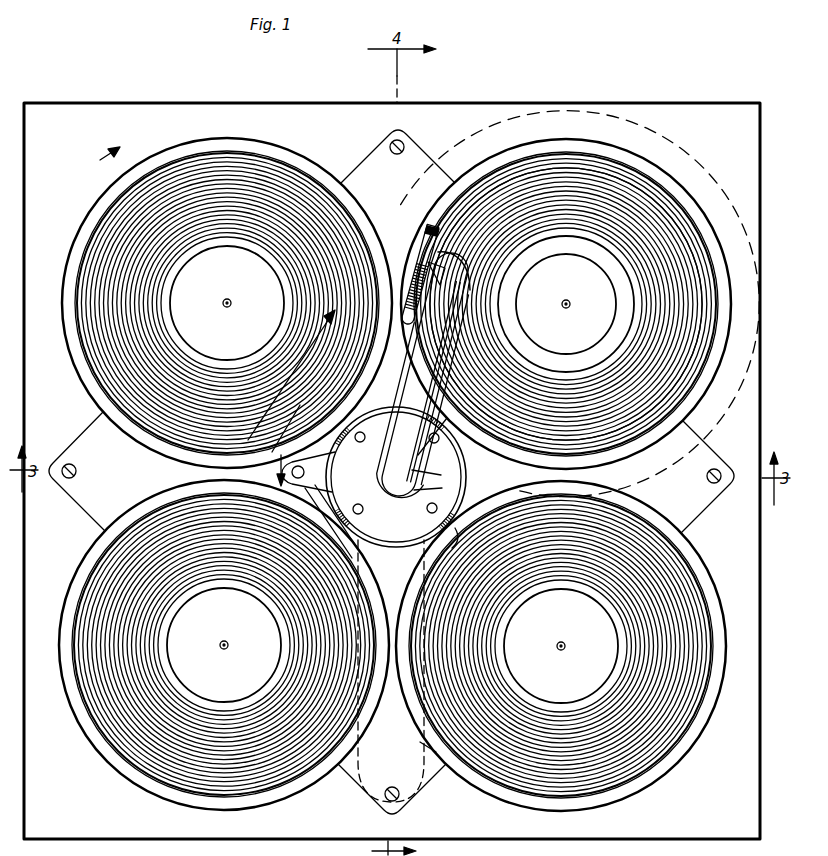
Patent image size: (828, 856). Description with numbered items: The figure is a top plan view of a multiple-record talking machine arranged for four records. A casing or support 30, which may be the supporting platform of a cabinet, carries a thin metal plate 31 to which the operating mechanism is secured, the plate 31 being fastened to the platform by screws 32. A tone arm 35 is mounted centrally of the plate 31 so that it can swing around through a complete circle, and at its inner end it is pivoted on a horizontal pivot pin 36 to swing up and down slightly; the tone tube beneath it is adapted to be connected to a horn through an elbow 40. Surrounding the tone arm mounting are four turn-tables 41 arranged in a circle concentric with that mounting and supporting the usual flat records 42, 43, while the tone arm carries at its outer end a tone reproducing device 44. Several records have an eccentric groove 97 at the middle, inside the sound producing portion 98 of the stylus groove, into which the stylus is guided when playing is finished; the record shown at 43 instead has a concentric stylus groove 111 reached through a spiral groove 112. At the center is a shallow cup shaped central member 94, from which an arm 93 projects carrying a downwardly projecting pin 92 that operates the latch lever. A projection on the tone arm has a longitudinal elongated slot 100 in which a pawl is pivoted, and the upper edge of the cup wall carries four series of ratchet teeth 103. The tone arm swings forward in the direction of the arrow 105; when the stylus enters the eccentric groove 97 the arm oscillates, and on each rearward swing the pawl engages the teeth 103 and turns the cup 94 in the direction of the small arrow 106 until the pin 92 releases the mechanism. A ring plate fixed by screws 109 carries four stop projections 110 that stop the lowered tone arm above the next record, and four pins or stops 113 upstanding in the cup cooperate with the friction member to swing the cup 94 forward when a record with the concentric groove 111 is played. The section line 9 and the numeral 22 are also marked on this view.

The section line arrow 9 is at (104, 157).
The pick-up arm 22 is at (428, 396).
The casing or support 30 is at (632, 120).
The thin metal plate 31 is at (370, 158).
The screws 32 is at (405, 147).
The tone arm 35 is at (462, 262).
The horizontal pivot pin 36 is at (372, 480).
The elbow 40 is at (428, 750).
The turn-tables 41 is at (683, 192).
The flat record 42 is at (90, 254).
The flat record 43 is at (694, 262).
The tone reproducing device 44 is at (426, 246).
The downwardly projecting pin 92 is at (300, 498).
The arm 93 is at (312, 516).
The cup shaped central member 94 is at (447, 405).
The eccentric groove 97 is at (176, 328).
The sound producing portion 98 is at (178, 162).
The longitudinal elongated slot 100 is at (455, 528).
The ratchet teeth 103 is at (315, 396).
The arrow 105 is at (300, 335).
The small arrow 106 is at (280, 456).
The screws 109 is at (372, 409).
The stop projections 110 is at (441, 475).
The concentric stylus groove 111 is at (614, 312).
The spiral groove 112 is at (560, 242).
The pins or stops 113 is at (442, 488).